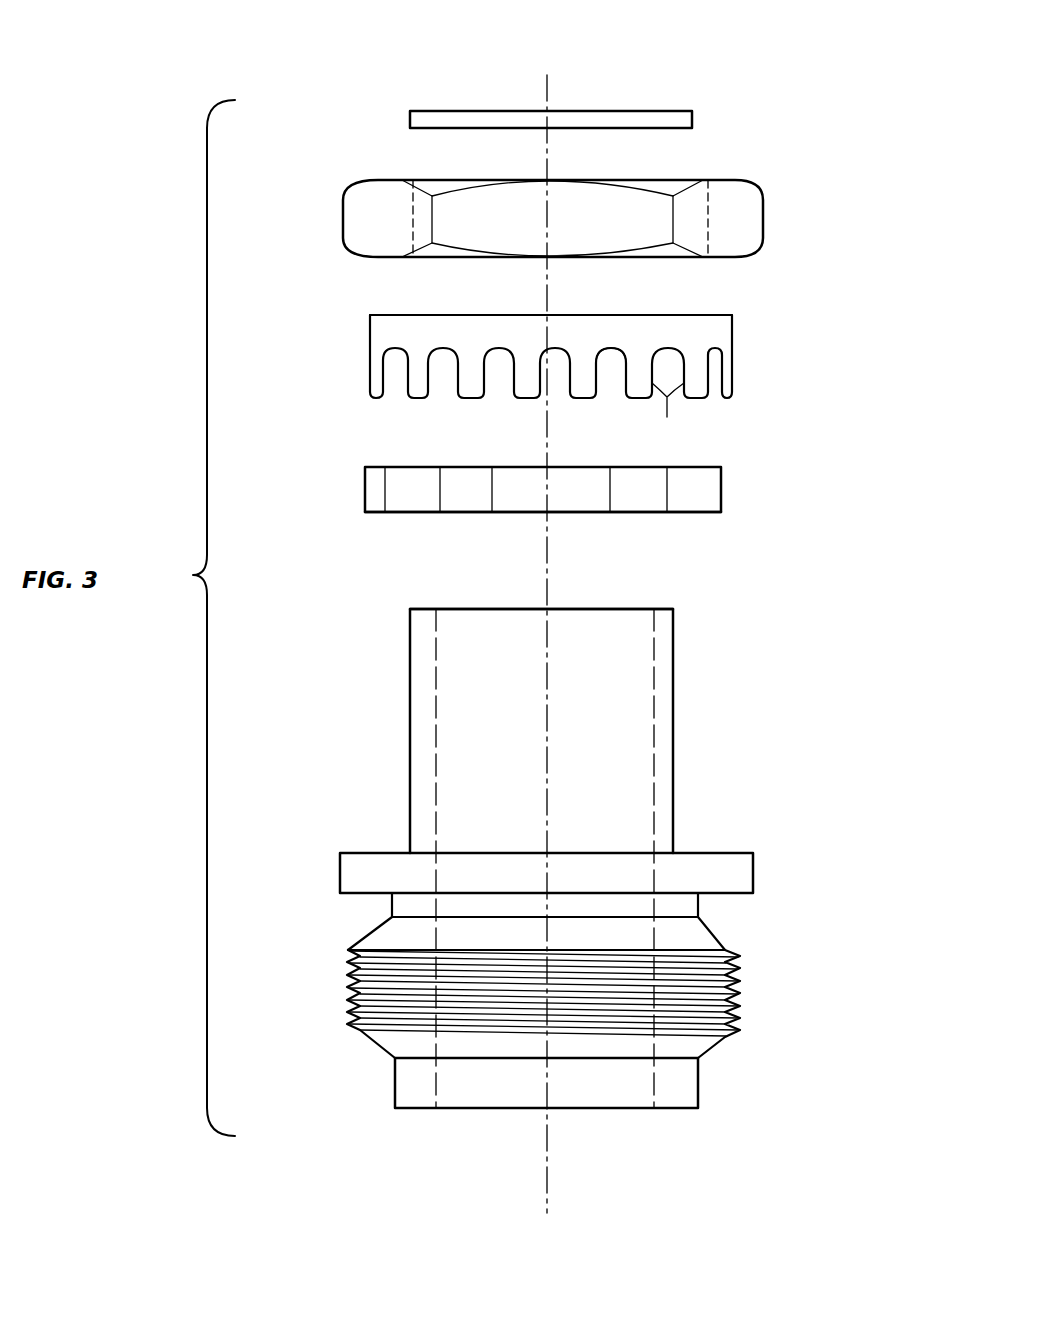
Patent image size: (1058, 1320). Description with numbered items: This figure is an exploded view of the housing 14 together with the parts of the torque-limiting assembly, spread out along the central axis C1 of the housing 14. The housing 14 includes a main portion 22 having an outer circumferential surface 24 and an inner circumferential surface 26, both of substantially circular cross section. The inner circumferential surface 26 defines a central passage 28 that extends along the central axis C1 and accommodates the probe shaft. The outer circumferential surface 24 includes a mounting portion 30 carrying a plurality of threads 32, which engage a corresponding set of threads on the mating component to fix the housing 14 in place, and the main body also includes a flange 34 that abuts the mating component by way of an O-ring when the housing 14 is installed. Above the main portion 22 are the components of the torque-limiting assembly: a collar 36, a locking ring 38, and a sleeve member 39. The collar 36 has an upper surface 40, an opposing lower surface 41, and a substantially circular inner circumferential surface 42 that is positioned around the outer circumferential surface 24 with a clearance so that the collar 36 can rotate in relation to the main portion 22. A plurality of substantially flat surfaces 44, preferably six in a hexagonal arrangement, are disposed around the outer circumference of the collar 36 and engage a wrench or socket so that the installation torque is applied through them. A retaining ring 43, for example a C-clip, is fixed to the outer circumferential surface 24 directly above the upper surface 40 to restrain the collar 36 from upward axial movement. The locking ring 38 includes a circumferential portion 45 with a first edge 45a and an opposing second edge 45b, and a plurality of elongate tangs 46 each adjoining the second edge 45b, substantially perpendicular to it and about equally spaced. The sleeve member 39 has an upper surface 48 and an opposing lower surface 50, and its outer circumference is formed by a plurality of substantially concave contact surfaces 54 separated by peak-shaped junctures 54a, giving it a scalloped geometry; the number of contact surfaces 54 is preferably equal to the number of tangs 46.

The housing 14 is at (806, 52).
The main portion 22 is at (549, 836).
The outer circumferential surface 24 is at (410, 738).
The inner circumferential surface 26 is at (437, 622).
The central passage 28 is at (579, 655).
The mounting portion 30 is at (496, 1000).
The threads 32 is at (345, 987).
The flange 34 is at (340, 875).
The collar 36 is at (610, 209).
The locking ring 38 is at (603, 359).
The sleeve member 39 is at (604, 491).
The upper surface 40 is at (688, 180).
The lower surface 41 is at (665, 258).
The inner circumferential surface 42 is at (412, 232).
The retaining ring 43 is at (630, 110).
The flat surfaces 44 is at (530, 222).
The circumferential portion 45 is at (477, 346).
The first edge 45a is at (400, 313).
The second edge 45b is at (605, 350).
The tangs 46 is at (668, 420).
The upper surface 48 is at (415, 467).
The lower surface 50 is at (418, 512).
The contact surfaces 54 is at (477, 501).
The peak-shaped junctures 54a is at (492, 492).
The central axis C1 is at (546, 1125).